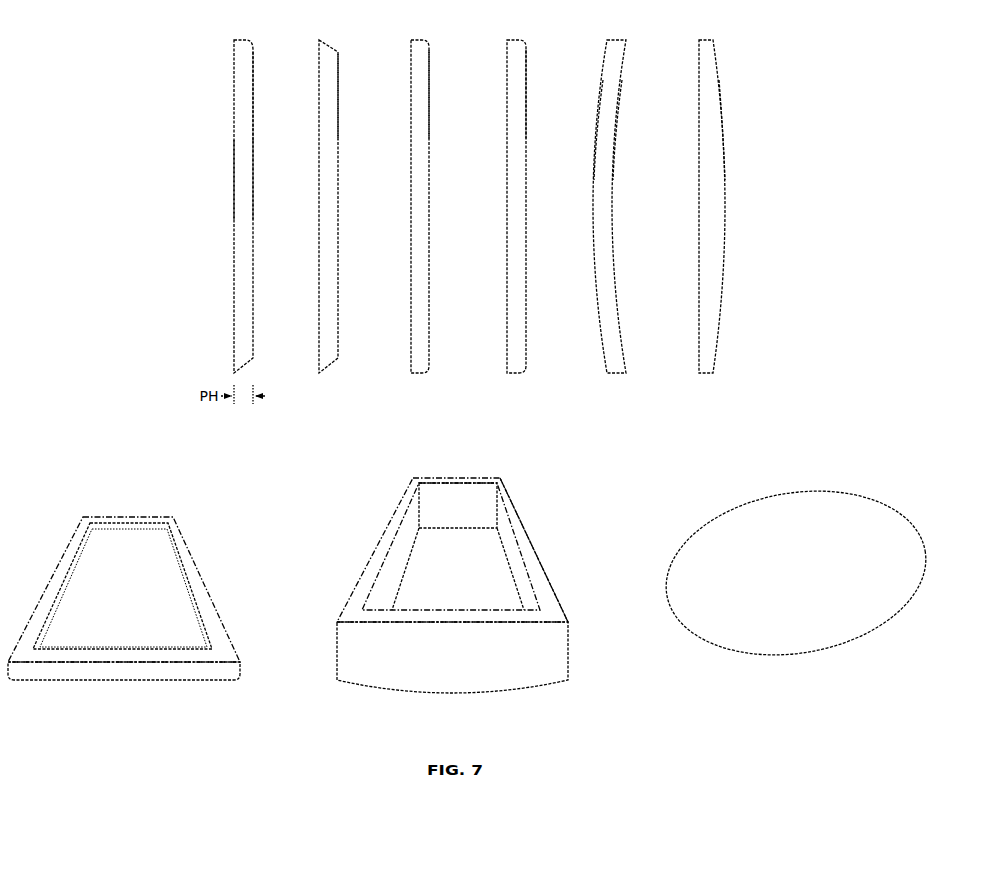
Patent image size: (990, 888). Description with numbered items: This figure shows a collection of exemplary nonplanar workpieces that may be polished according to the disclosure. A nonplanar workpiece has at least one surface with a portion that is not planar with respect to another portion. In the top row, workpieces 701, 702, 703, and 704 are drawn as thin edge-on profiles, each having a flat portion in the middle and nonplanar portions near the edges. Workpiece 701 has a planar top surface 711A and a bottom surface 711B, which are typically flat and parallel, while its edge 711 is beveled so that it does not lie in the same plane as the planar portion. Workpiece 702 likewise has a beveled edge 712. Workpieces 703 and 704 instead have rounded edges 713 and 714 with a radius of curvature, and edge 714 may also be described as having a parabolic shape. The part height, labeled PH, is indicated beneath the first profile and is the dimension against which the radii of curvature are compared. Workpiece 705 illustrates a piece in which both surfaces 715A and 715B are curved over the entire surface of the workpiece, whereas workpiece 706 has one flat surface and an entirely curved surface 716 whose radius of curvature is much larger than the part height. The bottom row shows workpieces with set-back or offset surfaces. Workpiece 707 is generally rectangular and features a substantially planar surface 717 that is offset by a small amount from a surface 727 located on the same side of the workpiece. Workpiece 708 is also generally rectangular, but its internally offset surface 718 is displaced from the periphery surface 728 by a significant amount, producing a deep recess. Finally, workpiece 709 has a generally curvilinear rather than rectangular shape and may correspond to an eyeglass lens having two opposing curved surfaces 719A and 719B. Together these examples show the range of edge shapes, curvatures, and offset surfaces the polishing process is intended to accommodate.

The workpiece 701 is at (231, 51).
The workpiece 702 is at (317, 51).
The workpiece 703 is at (409, 50).
The workpiece 704 is at (505, 50).
The workpiece 705 is at (605, 50).
The workpiece 706 is at (697, 50).
The workpiece 707 is at (134, 583).
The workpiece 708 is at (452, 565).
The workpiece 709 is at (778, 564).
The edge 711 is at (257, 50).
The top surface 711A is at (256, 175).
The bottom surface 711B is at (232, 175).
The edge 712 is at (341, 50).
The rounded edge 713 is at (432, 43).
The rounded edge 714 is at (528, 43).
The curved surface 715A is at (624, 92).
The curved surface 715B is at (598, 92).
The entirely curved surface 716 is at (722, 92).
The planar surface 717 is at (87, 588).
The internally offset surface 718 is at (418, 565).
The curved surface 719A is at (682, 585).
The curved surface 719B is at (697, 641).
The surface 727 is at (218, 615).
The periphery surface 728 is at (503, 471).